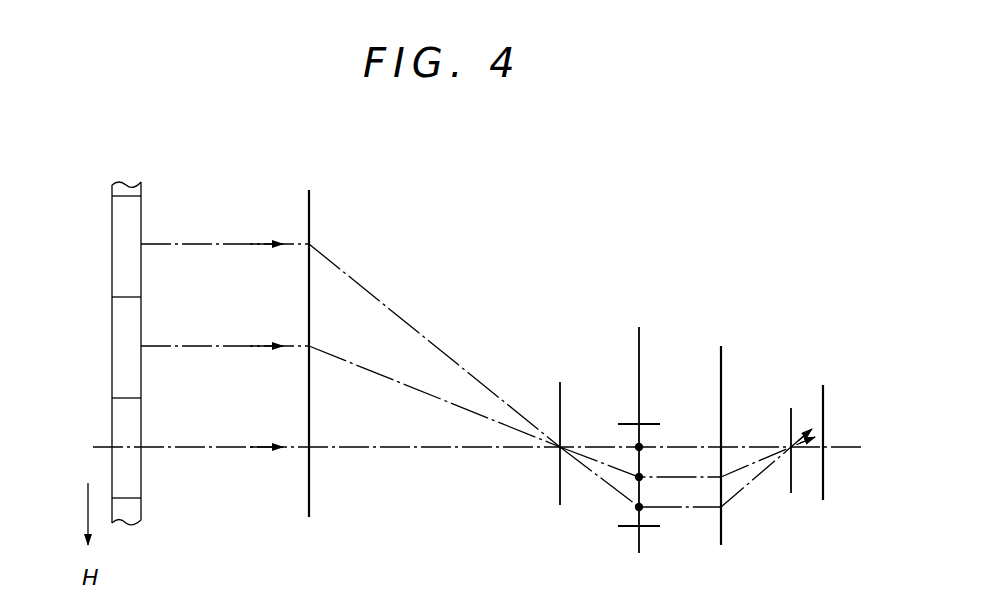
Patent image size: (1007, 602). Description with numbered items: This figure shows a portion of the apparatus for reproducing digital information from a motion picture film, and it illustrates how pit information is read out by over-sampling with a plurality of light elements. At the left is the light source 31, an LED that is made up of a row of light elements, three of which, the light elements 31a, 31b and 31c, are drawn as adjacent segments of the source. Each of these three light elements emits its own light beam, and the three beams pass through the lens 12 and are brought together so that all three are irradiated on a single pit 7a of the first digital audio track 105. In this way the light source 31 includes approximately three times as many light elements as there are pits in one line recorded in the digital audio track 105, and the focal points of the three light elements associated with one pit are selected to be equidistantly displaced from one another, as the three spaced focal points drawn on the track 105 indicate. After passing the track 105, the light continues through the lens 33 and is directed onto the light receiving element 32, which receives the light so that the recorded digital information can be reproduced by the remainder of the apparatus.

The light source 31 is at (132, 520).
The light element 31a is at (119, 257).
The light element 31b is at (119, 359).
The light element 31c is at (119, 427).
The lens 12 is at (311, 222).
The first digital audio track 105 is at (642, 335).
The pit 7a is at (620, 503).
The lens 33 is at (723, 355).
The light receiving element 32 is at (826, 392).